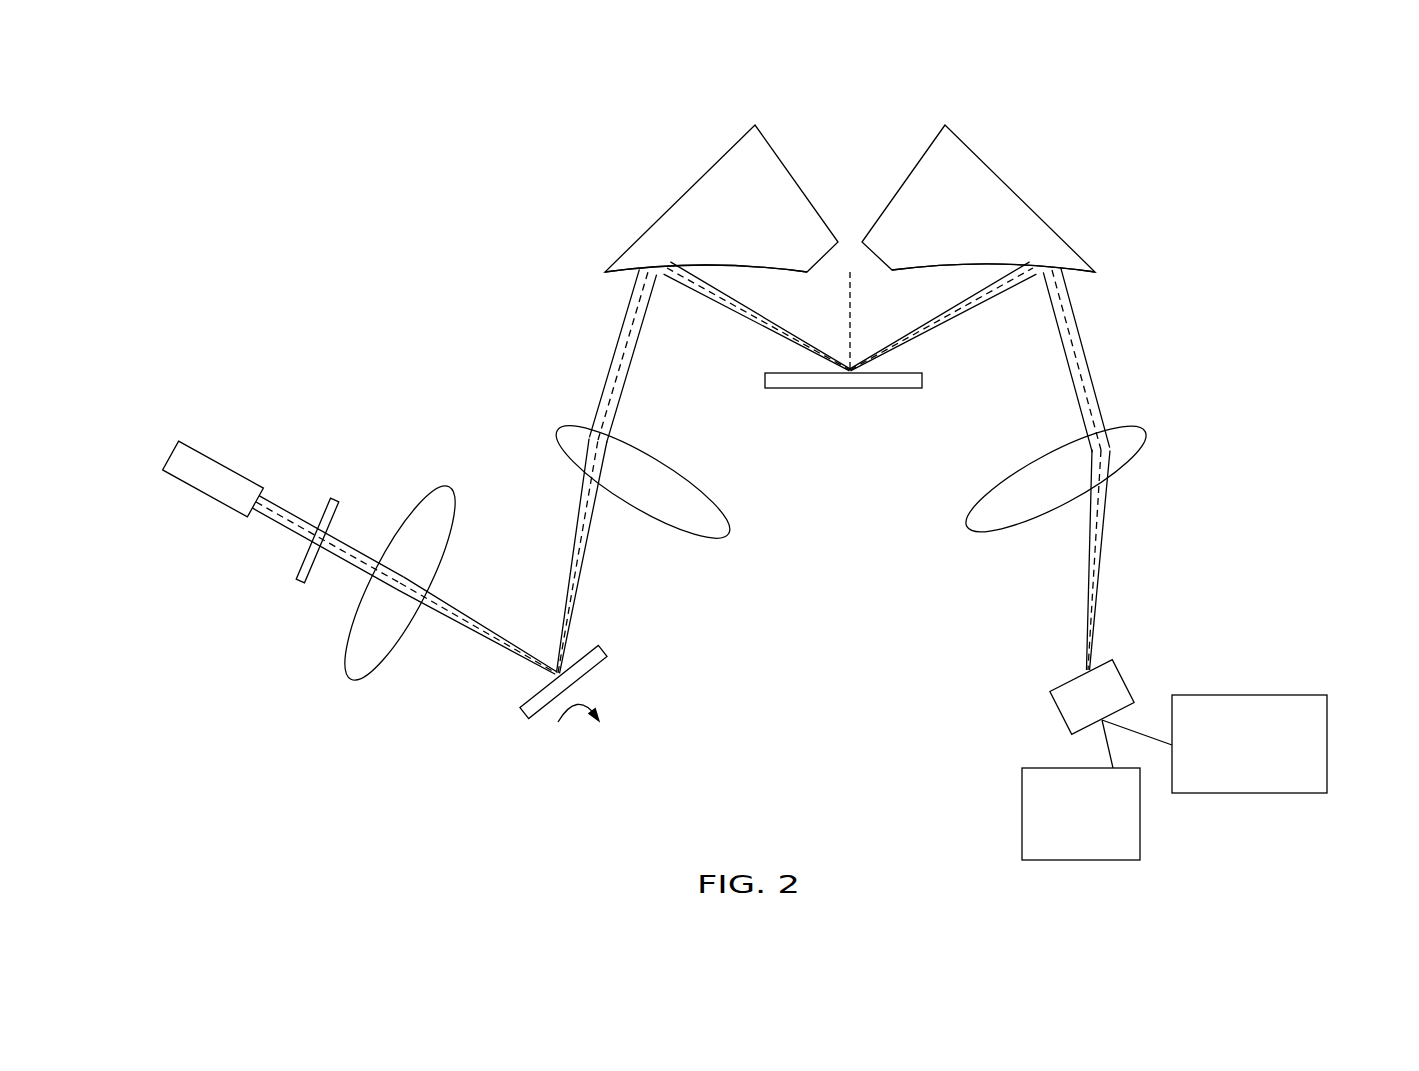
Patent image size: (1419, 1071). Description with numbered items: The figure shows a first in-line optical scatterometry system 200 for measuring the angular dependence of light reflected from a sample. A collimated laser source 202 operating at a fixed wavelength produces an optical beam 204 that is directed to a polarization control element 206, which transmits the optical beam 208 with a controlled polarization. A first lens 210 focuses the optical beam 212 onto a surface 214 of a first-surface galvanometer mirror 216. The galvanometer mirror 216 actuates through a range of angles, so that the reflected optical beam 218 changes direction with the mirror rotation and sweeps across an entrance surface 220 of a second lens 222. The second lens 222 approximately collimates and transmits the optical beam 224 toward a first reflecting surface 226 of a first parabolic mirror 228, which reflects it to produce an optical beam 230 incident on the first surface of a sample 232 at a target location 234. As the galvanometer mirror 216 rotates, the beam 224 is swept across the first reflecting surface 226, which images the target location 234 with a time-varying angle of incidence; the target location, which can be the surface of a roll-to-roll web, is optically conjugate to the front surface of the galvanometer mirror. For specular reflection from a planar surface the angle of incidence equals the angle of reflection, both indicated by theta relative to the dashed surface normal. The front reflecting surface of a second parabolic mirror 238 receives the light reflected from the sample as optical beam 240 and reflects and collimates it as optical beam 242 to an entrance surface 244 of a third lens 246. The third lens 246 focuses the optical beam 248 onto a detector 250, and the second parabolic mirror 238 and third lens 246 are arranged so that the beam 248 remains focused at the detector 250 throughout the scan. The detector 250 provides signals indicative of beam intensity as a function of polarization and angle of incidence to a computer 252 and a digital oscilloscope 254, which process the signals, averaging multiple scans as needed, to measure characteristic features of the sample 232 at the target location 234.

The in-line optical scatterometry system 200 is at (355, 127).
The collimated laser source 202 is at (195, 490).
The optical beam 204 is at (283, 530).
The polarization control element 206 is at (332, 498).
The optical beam with controlled polarization 208 is at (340, 560).
The first lens 210 is at (350, 687).
The focused optical beam 212 is at (463, 627).
The surface of galvanometer mirror 214 is at (523, 710).
The galvanometer mirror 216 is at (636, 695).
The reflected optical beam 218 is at (580, 567).
The entrance surface of second lens 220 is at (610, 520).
The second lens 222 is at (708, 535).
The collimated optical beam 224 is at (608, 372).
The first reflecting surface 226 is at (743, 268).
The first parabolic mirror 228 is at (698, 182).
The incident optical beam 230 is at (697, 298).
The sample 232 is at (893, 390).
The target location 234 is at (852, 313).
The second parabolic mirror 238 is at (1022, 193).
The reflected optical beam 240 is at (933, 332).
The collimated reflected optical beam 242 is at (1088, 365).
The entrance surface of third lens 244 is at (1086, 529).
The third lens 246 is at (1012, 527).
The focused optical beam 248 is at (1103, 547).
The detector 250 is at (1058, 712).
The computer 252 is at (1022, 813).
The digital oscilloscope 254 is at (1327, 745).